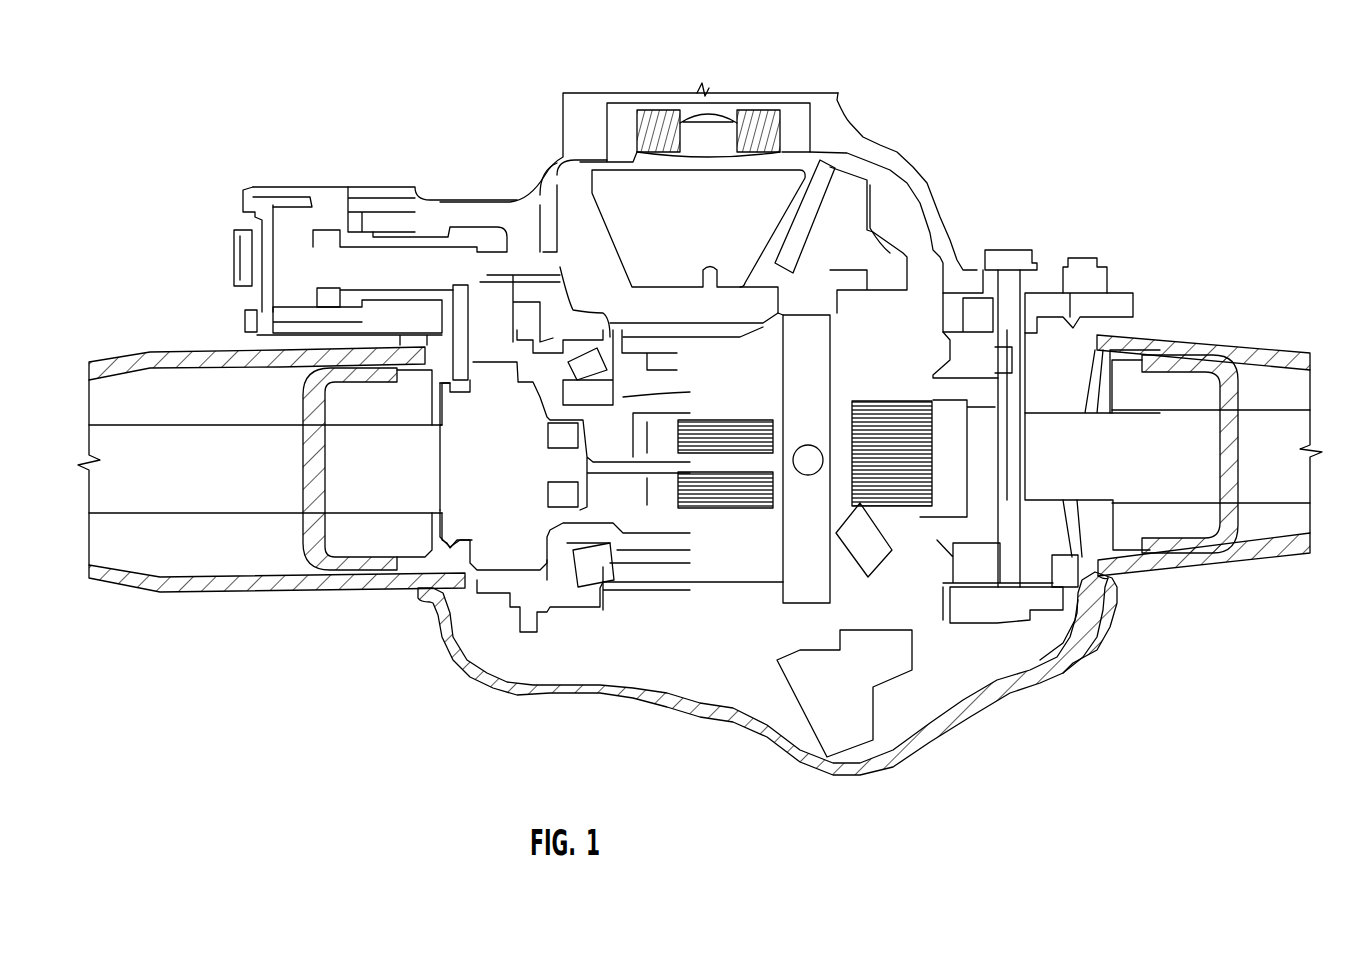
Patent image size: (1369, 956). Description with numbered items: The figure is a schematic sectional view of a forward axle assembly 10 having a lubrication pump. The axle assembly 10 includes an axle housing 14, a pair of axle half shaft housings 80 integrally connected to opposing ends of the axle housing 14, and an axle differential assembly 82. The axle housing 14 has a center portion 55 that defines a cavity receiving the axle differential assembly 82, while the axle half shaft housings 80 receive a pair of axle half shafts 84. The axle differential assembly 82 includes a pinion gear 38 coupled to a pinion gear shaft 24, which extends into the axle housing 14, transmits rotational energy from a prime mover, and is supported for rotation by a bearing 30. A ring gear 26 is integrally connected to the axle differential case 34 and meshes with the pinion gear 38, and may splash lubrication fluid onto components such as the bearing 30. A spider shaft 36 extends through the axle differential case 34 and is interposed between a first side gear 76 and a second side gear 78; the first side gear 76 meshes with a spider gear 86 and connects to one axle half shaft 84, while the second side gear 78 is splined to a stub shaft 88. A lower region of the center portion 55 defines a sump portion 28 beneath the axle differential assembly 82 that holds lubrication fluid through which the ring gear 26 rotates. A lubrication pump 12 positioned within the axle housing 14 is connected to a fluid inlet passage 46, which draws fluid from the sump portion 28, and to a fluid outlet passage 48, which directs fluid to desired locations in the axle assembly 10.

The axle assembly 10 is at (1130, 105).
The lubrication pump 12 is at (1110, 587).
The axle housing 14 is at (550, 163).
The pinion gear shaft 24 is at (780, 92).
The ring gear 26 is at (843, 203).
The sump portion 28 is at (908, 725).
The bearing 30 is at (657, 118).
The axle differential case 34 is at (890, 253).
The spider shaft 36 is at (800, 580).
The pinion gear 38 is at (782, 200).
The fluid inlet passage 46 is at (1073, 640).
The fluid outlet passage 48 is at (1105, 375).
The center portion 55 is at (705, 735).
The first side gear 76 is at (918, 435).
The second side gear 78 is at (718, 495).
The axle half shaft housing 80 is at (235, 537).
The axle differential assembly 82 is at (678, 630).
The axle half shaft 84 is at (135, 485).
The spider gear 86 is at (883, 522).
The stub shaft 88 is at (617, 470).